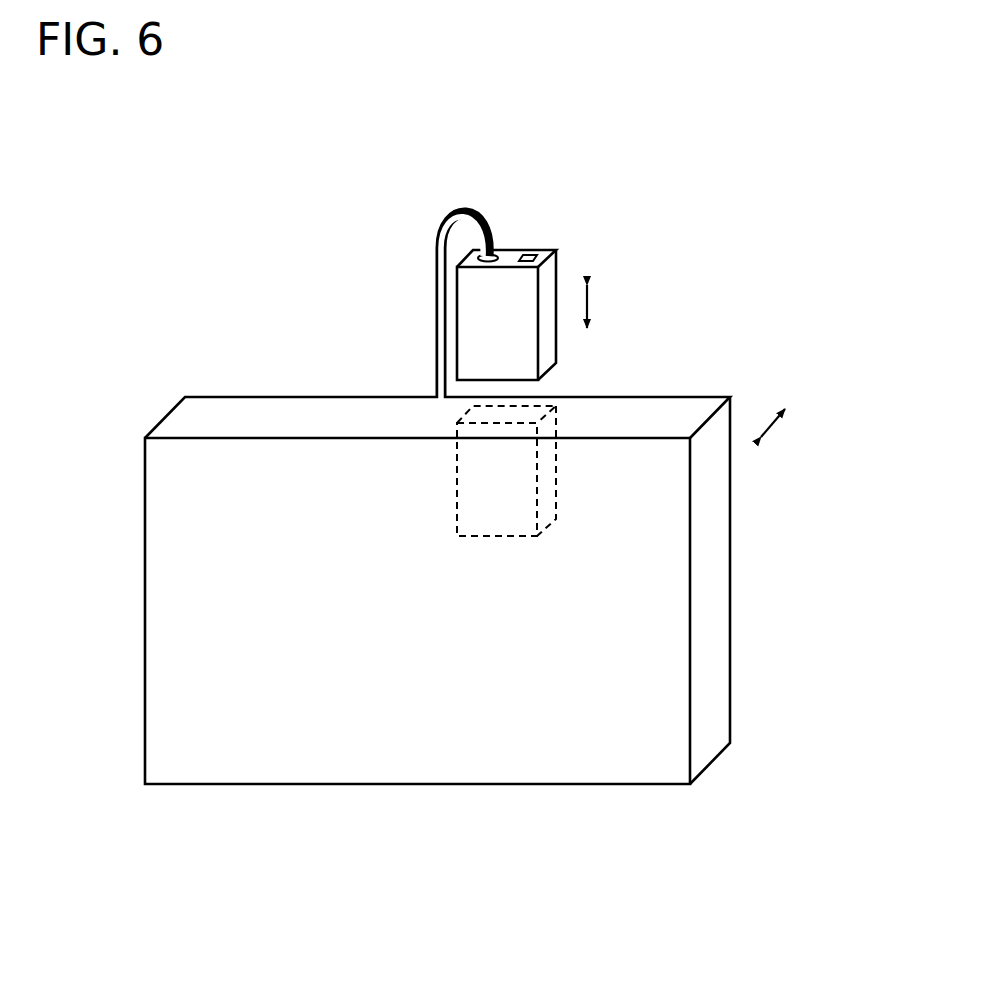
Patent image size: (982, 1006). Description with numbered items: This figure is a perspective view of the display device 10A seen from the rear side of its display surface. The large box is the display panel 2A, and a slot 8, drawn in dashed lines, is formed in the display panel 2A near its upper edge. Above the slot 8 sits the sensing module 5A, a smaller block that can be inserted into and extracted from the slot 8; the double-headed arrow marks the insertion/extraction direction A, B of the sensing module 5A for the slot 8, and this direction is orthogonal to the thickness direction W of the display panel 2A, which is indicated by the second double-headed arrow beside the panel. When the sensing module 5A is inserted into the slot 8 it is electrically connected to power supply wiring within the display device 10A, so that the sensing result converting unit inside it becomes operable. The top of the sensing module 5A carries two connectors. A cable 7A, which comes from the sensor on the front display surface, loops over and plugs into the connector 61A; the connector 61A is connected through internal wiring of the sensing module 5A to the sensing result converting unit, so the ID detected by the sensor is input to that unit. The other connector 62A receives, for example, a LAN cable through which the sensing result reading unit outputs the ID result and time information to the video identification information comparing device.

The display device 10A is at (735, 286).
The display panel 2A is at (700, 410).
The sensing module 5A is at (557, 250).
The connector 61A is at (489, 255).
The connector 62A is at (529, 256).
The cable 7A is at (437, 232).
The slot 8 is at (557, 500).
The insertion/extraction direction A is at (586, 290).
The insertion/extraction direction B is at (586, 331).
The thickness direction W is at (782, 427).